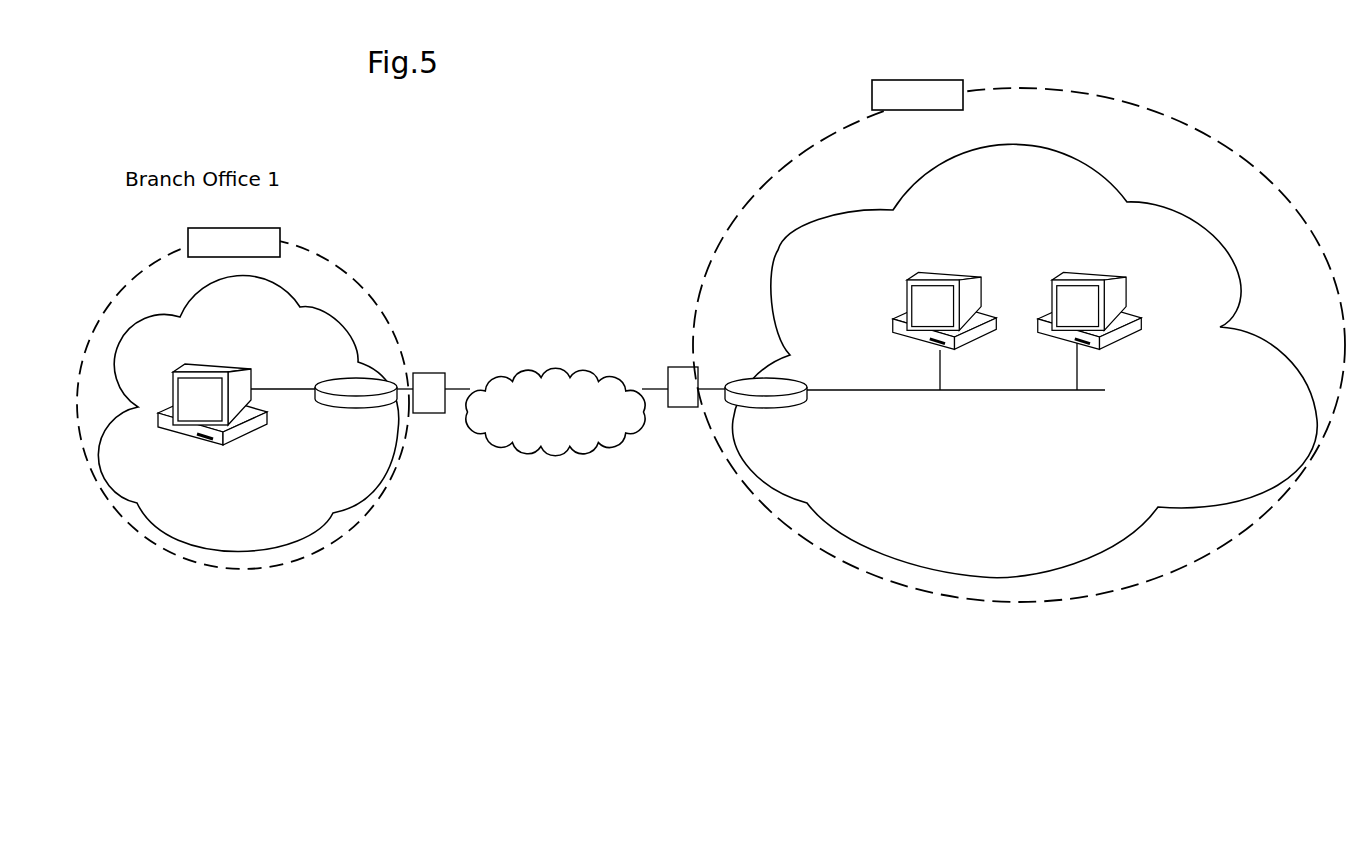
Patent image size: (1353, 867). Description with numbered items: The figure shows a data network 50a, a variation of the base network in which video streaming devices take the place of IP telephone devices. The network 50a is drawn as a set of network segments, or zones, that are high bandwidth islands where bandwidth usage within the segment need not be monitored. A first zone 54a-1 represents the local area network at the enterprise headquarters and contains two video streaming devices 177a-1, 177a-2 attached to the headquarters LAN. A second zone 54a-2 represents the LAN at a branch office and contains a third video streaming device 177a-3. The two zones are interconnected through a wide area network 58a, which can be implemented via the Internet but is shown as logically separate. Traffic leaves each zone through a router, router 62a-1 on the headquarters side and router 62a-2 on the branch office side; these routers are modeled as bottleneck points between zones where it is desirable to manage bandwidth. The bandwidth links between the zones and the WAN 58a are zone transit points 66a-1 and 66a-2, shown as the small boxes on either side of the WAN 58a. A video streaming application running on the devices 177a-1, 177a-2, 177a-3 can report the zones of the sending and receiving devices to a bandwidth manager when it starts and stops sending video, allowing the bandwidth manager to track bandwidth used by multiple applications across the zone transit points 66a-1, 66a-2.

The network 50a is at (988, 310).
The zone 54a-1 is at (1110, 100).
The zone 54a-2 is at (332, 253).
The wide area network 58a is at (572, 372).
The router 62a-1 is at (736, 376).
The router 62a-2 is at (367, 365).
The zone transit point 66a-1 is at (684, 412).
The zone transit point 66a-2 is at (432, 366).
The video streaming device 177a-1 is at (1119, 291).
The video streaming device 177a-2 is at (900, 297).
The video streaming device 177a-3 is at (218, 364).